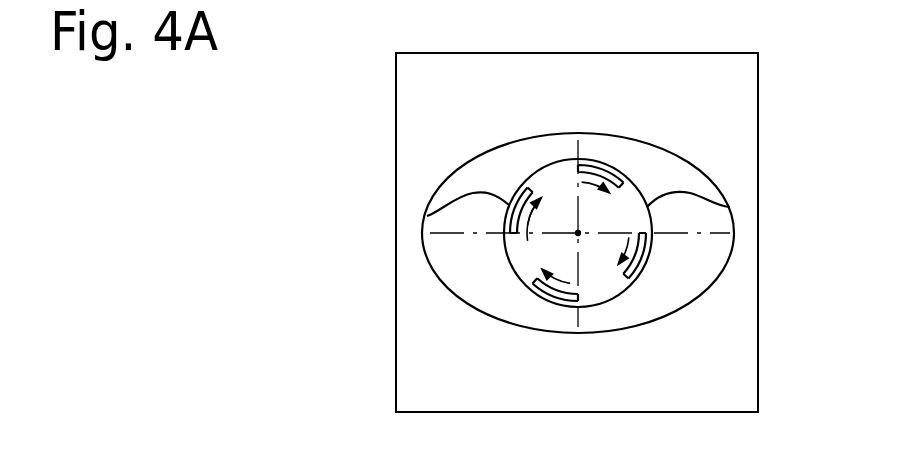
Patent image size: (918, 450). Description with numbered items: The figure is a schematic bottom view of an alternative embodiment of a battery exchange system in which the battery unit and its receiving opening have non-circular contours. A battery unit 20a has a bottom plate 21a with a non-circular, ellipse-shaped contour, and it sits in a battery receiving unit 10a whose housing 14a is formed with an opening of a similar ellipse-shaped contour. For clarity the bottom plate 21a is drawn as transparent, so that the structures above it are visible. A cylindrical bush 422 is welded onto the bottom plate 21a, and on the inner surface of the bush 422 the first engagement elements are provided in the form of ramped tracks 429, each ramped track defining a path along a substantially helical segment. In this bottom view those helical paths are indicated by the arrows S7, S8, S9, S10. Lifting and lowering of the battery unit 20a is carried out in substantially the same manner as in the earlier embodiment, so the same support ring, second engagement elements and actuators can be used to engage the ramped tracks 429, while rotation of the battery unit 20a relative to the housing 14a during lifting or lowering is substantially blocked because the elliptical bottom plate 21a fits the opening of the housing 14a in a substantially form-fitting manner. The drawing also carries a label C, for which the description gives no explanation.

The battery receiving unit 10a is at (456, 158).
The housing 14a is at (712, 372).
The battery unit 20a is at (450, 255).
The bottom plate 21a is at (598, 152).
The cylindrical bush 422 is at (730, 207).
The ramped tracks 429 is at (427, 216).
The center axis C is at (578, 233).
The arrow S7 is at (546, 219).
The arrow S8 is at (597, 202).
The arrow S9 is at (611, 250).
The arrow S10 is at (551, 262).